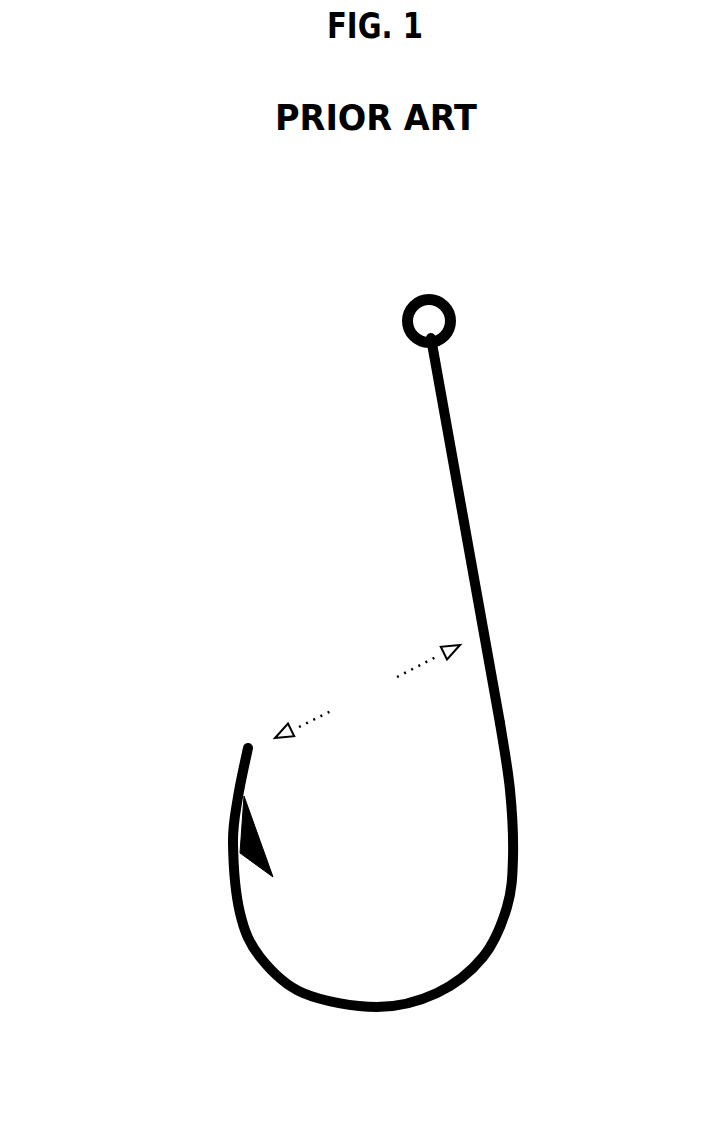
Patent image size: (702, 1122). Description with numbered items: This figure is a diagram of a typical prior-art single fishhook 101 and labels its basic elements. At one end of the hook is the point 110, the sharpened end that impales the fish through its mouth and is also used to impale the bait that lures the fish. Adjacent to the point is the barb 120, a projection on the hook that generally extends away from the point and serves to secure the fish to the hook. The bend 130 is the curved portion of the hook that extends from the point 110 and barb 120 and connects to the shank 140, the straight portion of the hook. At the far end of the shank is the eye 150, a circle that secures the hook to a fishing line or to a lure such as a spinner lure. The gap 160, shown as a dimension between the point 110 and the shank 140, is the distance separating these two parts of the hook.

The single fishhook 101 is at (137, 287).
The point 110 is at (222, 779).
The barb 120 is at (283, 836).
The bend 130 is at (373, 888).
The shank 140 is at (488, 530).
The eye 150 is at (459, 312).
The gap 160 is at (367, 691).